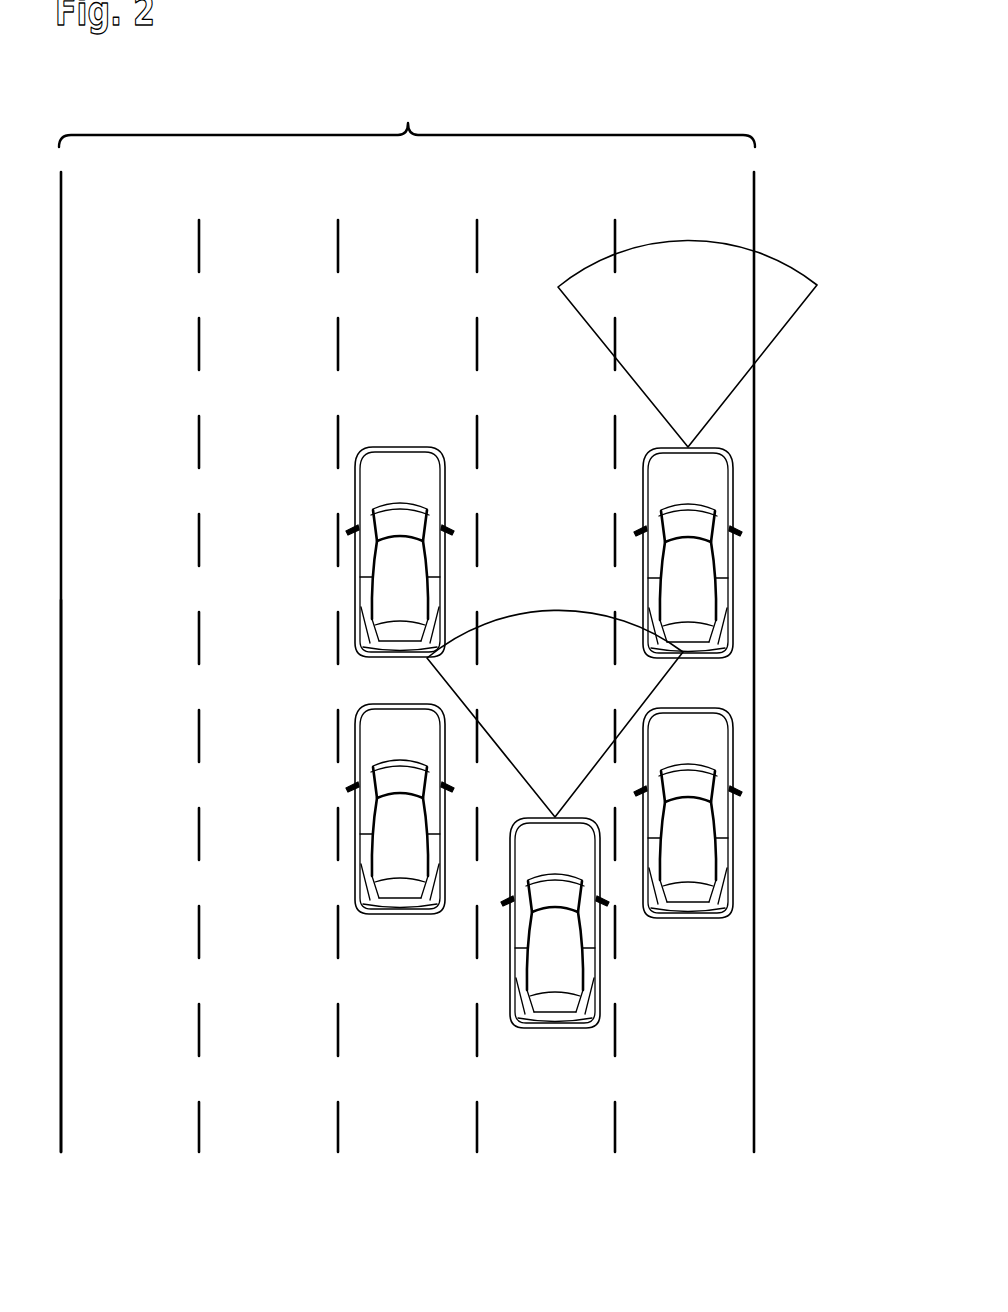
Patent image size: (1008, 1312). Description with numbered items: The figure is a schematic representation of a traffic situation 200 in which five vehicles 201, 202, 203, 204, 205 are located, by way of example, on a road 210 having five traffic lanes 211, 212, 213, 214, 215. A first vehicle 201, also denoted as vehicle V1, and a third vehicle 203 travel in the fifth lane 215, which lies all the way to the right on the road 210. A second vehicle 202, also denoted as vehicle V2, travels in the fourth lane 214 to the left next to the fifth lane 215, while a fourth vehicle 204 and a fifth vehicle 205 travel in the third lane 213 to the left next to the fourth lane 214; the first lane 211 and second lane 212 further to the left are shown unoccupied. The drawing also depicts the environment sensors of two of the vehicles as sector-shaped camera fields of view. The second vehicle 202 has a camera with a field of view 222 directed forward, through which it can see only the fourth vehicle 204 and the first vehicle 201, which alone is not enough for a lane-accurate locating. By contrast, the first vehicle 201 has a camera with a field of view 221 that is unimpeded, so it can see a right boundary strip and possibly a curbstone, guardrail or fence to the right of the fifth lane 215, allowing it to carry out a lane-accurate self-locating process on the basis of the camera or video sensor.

The traffic situation 200 is at (270, 243).
The first vehicle 201 is at (733, 557).
The second vehicle 202 is at (602, 965).
The third vehicle 203 is at (733, 812).
The fourth vehicle 204 is at (360, 556).
The fifth vehicle 205 is at (360, 815).
The road 210 is at (407, 116).
The first lane 211 is at (116, 1137).
The second lane 212 is at (254, 1137).
The third lane 213 is at (392, 1137).
The fourth lane 214 is at (530, 1137).
The fifth lane 215 is at (668, 1137).
The field of view 221 is at (768, 348).
The field of view 222 is at (663, 689).